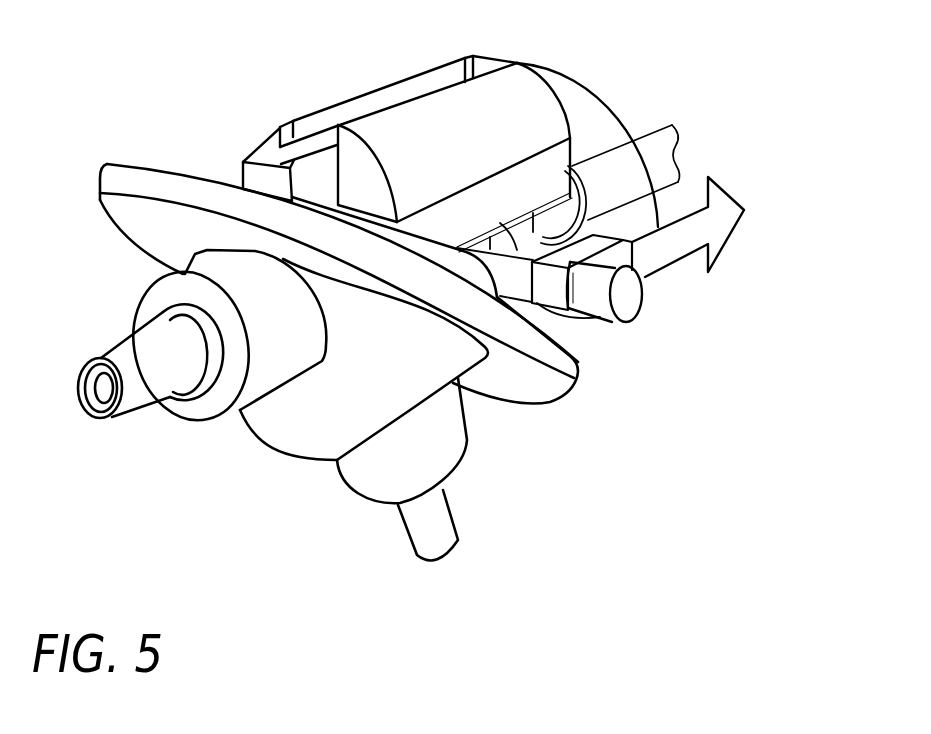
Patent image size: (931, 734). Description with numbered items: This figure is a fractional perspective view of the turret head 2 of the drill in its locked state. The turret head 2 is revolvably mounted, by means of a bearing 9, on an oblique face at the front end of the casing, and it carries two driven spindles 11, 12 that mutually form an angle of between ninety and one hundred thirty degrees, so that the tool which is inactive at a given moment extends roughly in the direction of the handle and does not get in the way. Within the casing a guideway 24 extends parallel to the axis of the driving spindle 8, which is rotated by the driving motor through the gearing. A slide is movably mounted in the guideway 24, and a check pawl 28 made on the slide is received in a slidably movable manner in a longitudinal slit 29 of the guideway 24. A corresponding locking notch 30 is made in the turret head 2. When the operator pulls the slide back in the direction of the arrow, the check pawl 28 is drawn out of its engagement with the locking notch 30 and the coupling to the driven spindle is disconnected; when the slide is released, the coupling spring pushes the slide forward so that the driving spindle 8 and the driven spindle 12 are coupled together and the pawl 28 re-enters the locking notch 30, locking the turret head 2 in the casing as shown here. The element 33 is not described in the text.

The turret head 2 is at (283, 443).
The driving spindle 8 is at (660, 170).
The bearing 9 is at (462, 258).
The driven spindle 11 is at (137, 400).
The driven spindle 12 is at (410, 543).
The guideway 24 is at (522, 92).
The check pawl 28 is at (293, 153).
The longitudinal slit 29 is at (377, 104).
The locking notch 30 is at (305, 183).
The pin 33 is at (618, 302).